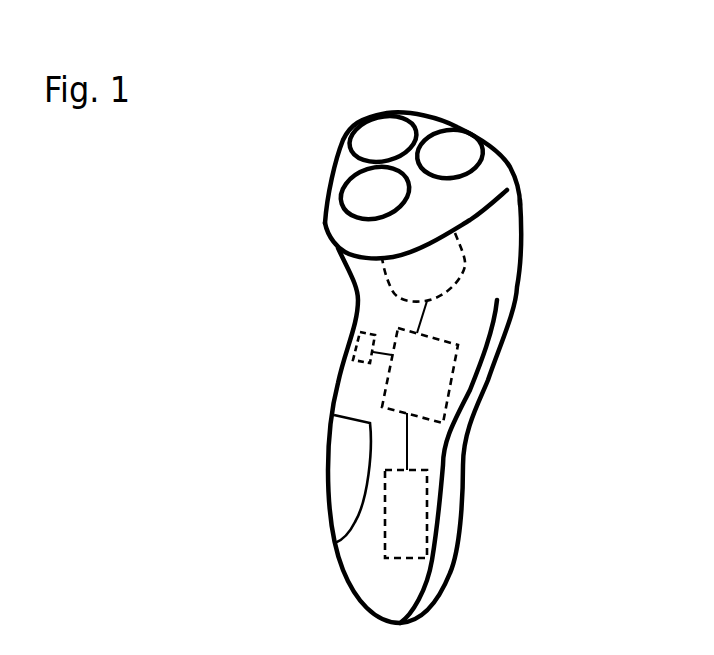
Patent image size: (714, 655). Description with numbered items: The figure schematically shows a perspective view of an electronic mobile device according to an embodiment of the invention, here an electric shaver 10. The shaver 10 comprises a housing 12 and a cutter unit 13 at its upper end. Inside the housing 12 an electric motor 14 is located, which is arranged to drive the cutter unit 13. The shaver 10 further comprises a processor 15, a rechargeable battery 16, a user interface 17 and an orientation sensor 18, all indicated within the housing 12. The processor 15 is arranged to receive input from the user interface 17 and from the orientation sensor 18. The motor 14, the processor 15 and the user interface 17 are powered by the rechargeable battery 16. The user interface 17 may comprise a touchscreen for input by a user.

The electric shaver 10 is at (463, 92).
The housing 12 is at (457, 562).
The cutter unit 13 is at (495, 182).
The electric motor 14 is at (465, 265).
The processor 15 is at (450, 385).
The rechargeable battery 16 is at (430, 505).
The user interface 17 is at (338, 465).
The orientation sensor 18 is at (355, 343).